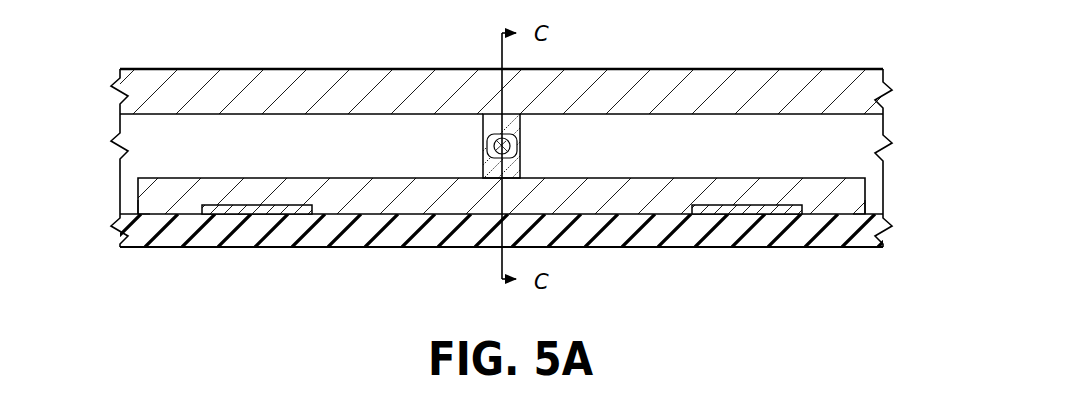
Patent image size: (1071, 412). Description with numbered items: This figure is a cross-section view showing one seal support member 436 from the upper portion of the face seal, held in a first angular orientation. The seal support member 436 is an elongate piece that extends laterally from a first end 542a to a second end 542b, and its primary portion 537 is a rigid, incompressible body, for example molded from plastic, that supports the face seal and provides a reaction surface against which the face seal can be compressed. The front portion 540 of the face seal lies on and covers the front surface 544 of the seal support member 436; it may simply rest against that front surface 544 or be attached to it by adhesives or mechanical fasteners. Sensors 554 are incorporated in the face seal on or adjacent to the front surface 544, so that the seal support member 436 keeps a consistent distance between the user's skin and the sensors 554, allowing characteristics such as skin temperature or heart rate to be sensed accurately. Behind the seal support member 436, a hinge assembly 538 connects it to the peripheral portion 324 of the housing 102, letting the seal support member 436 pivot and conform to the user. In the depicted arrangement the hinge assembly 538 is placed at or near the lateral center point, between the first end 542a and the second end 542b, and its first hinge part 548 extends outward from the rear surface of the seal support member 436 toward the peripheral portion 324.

The housing 102 is at (186, 55).
The peripheral portion 324 is at (810, 68).
The first hinge part 548 is at (870, 130).
The hinge assembly 538 is at (466, 154).
The seal support member 436 is at (498, 248).
The primary portion 537 is at (855, 187).
The front portion 540 is at (593, 247).
The front surface 544 is at (343, 235).
The sensors 554 is at (267, 214).
The first end 542a is at (140, 205).
The second end 542b is at (855, 207).